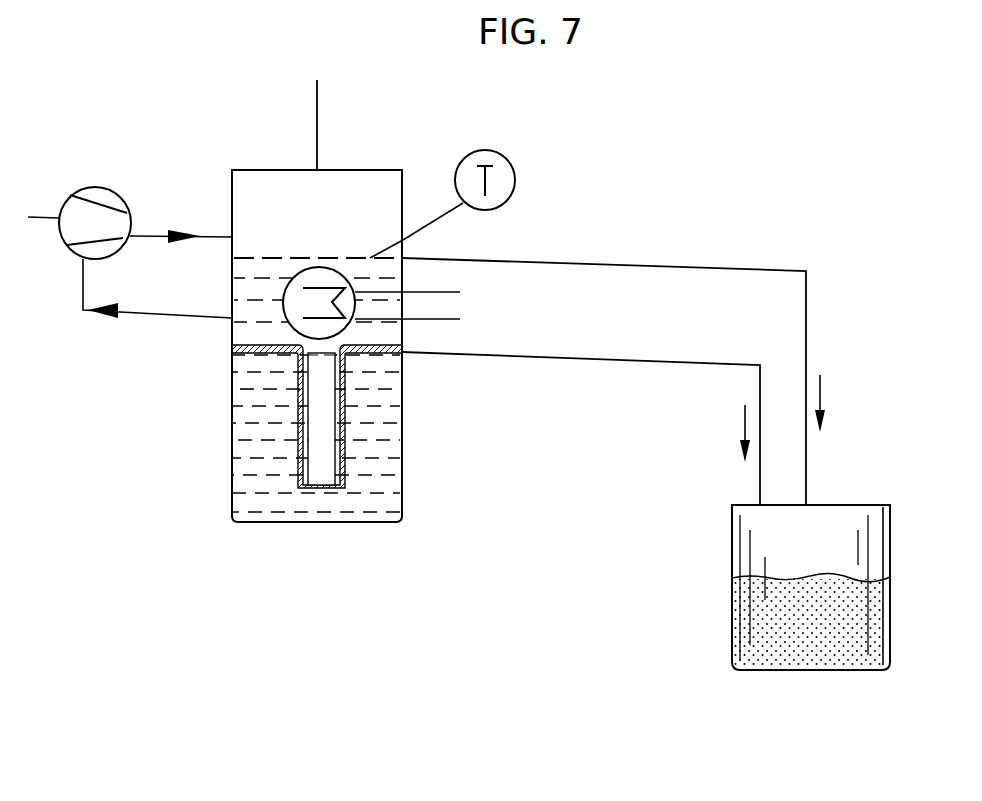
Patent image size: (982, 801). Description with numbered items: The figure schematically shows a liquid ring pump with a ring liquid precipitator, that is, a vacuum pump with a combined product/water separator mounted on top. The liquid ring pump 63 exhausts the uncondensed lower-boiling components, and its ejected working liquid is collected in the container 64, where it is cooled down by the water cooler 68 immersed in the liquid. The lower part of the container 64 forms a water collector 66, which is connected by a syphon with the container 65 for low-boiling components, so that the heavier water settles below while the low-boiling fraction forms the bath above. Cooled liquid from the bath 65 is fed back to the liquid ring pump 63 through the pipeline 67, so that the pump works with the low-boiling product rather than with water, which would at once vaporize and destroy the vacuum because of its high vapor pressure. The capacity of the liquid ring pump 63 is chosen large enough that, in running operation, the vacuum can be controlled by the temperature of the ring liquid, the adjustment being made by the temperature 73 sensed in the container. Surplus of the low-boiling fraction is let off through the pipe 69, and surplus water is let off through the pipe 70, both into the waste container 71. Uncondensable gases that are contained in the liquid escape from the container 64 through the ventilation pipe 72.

The liquid ring pump 63 is at (90, 187).
The container 64 is at (362, 216).
The container for low-boiling components 65 is at (248, 291).
The water collector 66 is at (258, 397).
The pipeline 67 is at (175, 322).
The water cooler 68 is at (307, 270).
The pipe 69 is at (680, 264).
The pipe 70 is at (632, 366).
The waste container 71 is at (826, 554).
The ventilation pipe 72 is at (313, 98).
The temperature 73 is at (515, 180).